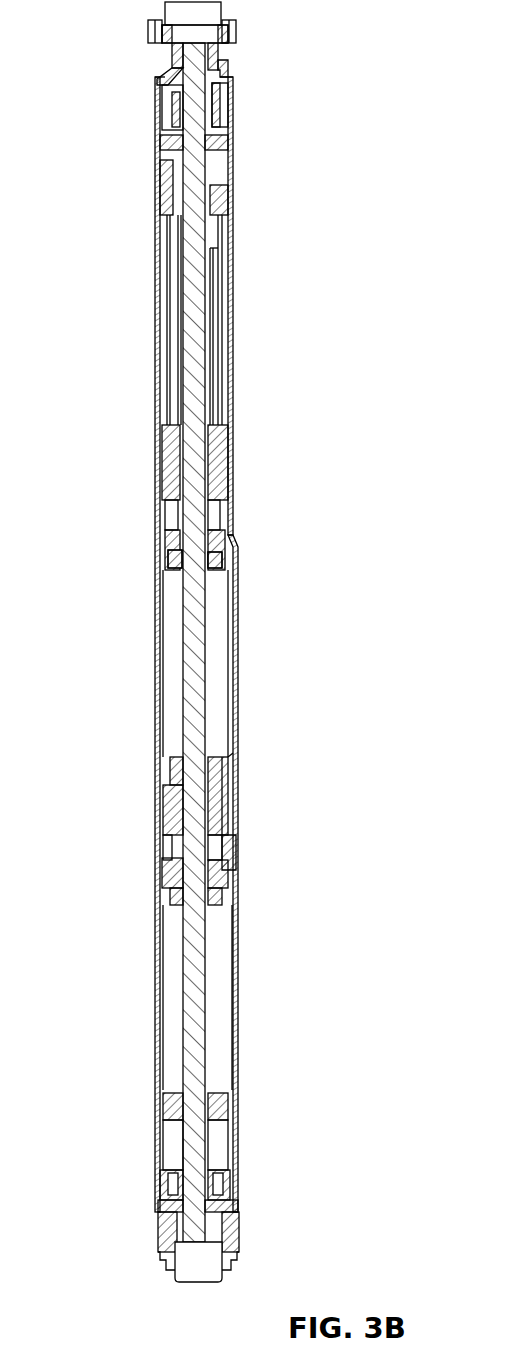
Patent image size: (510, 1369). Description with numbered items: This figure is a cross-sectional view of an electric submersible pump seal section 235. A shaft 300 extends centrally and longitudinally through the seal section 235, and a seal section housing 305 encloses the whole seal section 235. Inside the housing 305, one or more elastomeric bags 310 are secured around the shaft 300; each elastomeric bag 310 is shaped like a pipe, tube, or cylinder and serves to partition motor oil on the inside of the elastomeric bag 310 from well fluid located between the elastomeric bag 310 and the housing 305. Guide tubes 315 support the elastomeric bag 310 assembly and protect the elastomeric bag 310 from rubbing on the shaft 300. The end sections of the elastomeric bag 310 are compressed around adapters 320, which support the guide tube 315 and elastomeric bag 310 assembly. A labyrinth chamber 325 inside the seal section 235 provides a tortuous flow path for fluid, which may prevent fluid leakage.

The seal section 235 is at (240, 122).
The shaft 300 is at (195, 270).
The seal section housing 305 is at (157, 597).
The elastomeric bag 310 is at (217, 631).
The guide tube 315 is at (170, 812).
The adapter 320 is at (230, 870).
The labyrinth chamber 325 is at (222, 296).